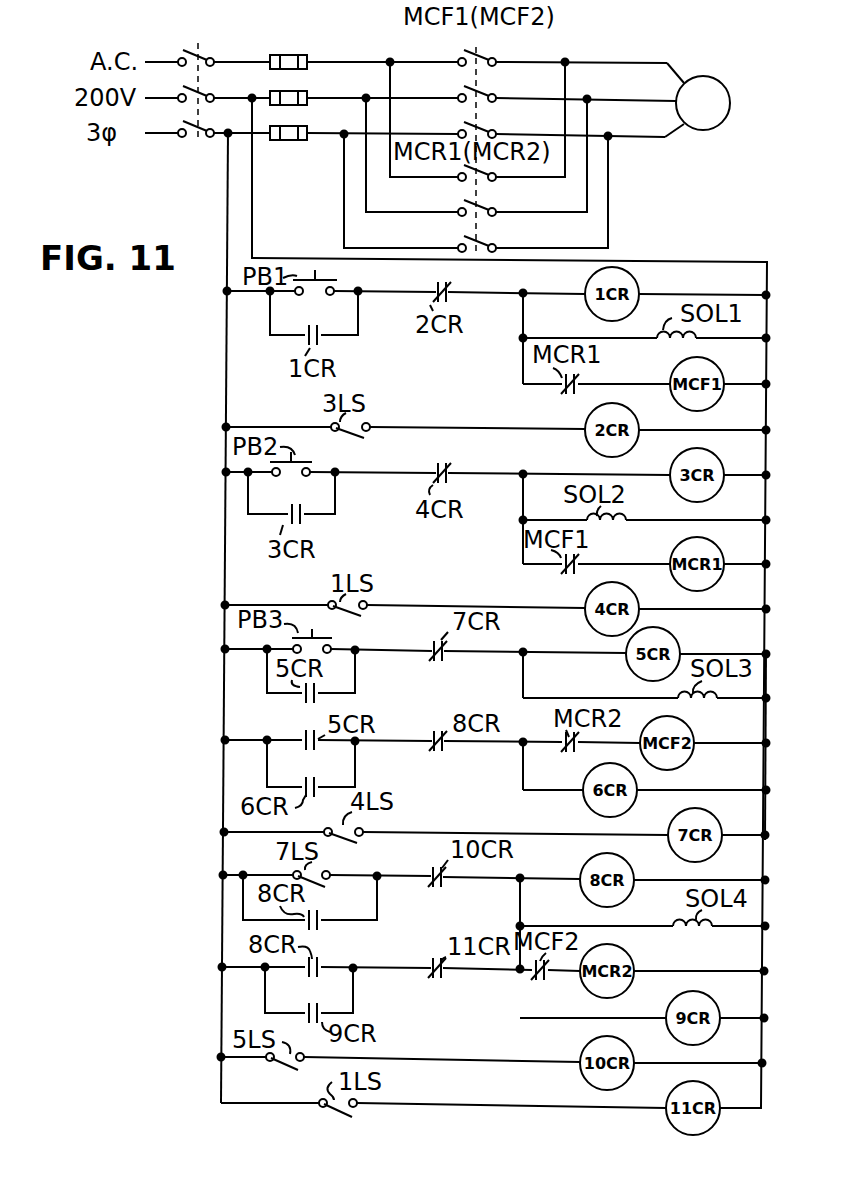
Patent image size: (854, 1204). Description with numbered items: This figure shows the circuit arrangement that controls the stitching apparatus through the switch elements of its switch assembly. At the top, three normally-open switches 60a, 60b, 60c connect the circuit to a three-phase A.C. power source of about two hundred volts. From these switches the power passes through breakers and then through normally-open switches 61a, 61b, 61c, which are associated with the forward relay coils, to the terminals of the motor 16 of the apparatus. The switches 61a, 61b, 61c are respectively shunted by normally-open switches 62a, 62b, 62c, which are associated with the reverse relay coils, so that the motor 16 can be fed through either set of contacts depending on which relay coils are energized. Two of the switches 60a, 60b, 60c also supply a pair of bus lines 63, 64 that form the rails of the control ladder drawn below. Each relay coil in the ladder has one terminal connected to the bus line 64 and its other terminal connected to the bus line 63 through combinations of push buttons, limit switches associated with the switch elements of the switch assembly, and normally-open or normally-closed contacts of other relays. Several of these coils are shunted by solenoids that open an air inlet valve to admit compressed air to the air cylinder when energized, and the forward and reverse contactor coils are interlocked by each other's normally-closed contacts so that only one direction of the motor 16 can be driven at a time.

The motor 16 is at (708, 131).
The normally-open switch 60a is at (202, 56).
The normally-open switch 60b is at (205, 93).
The normally-open switch 60c is at (190, 135).
The normally-open switch 61a is at (490, 56).
The normally-open switch 61b is at (487, 95).
The normally-open switch 61c is at (485, 139).
The normally-open switch 62a is at (464, 180).
The normally-open switch 62b is at (491, 206).
The normally-open switch 62c is at (467, 242).
The bus line 63 is at (225, 553).
The bus line 64 is at (764, 772).